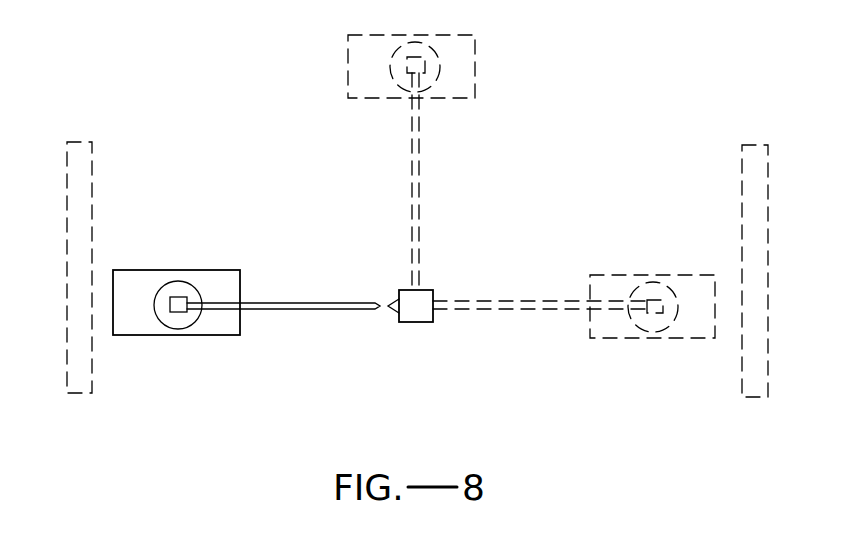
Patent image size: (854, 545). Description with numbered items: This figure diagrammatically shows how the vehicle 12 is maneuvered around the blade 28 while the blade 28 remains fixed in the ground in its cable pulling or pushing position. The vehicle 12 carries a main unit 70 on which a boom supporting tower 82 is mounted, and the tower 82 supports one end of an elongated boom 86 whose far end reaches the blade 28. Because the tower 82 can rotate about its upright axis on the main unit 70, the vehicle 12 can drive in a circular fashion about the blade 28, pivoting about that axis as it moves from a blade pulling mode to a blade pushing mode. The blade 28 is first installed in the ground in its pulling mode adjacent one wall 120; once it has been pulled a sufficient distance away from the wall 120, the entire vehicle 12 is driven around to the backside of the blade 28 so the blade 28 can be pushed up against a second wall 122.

The vehicle 12 is at (225, 330).
The blade 28 is at (423, 320).
The main unit 70 is at (162, 328).
The boom supporting tower 82 is at (178, 297).
The boom 86 is at (323, 310).
The wall 120 is at (747, 183).
The second wall 122 is at (88, 200).